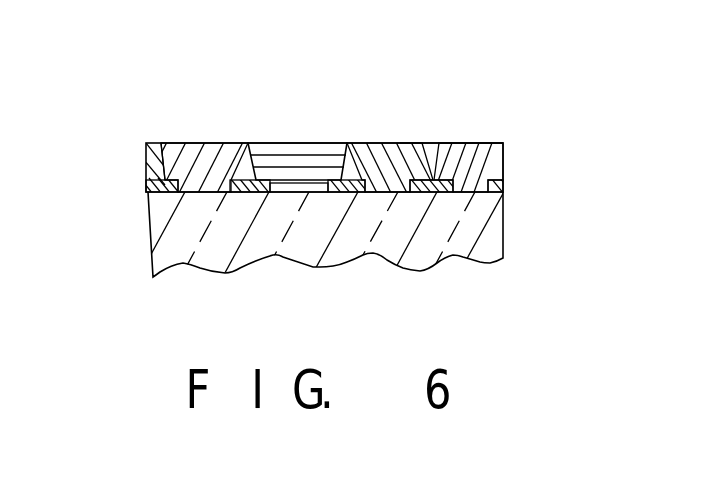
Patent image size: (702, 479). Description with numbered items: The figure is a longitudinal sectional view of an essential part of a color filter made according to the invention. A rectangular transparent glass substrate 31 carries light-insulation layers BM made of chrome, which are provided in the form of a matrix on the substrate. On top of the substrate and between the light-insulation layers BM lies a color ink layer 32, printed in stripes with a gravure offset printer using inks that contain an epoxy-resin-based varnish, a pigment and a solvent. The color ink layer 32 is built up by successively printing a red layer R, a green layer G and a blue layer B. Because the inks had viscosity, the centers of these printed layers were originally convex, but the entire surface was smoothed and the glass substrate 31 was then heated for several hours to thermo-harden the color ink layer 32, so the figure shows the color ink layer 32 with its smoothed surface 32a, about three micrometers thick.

The transparent glass substrate 31 is at (487, 215).
The color ink layer 32 is at (138, 152).
The surface of the color ink layer 32a is at (480, 143).
The blue layer B is at (210, 143).
The green layer G is at (312, 143).
The red layer R is at (399, 143).
The light-insulation layers BM is at (237, 192).